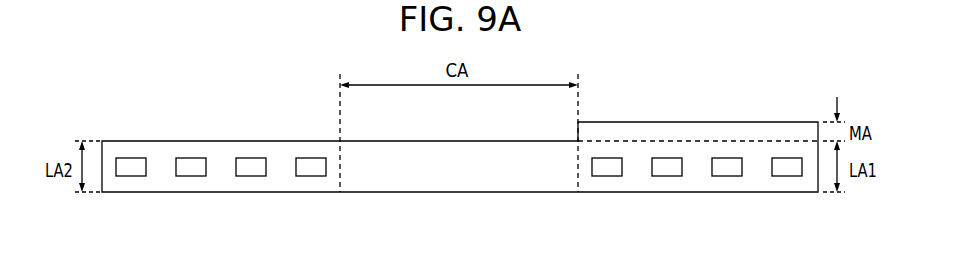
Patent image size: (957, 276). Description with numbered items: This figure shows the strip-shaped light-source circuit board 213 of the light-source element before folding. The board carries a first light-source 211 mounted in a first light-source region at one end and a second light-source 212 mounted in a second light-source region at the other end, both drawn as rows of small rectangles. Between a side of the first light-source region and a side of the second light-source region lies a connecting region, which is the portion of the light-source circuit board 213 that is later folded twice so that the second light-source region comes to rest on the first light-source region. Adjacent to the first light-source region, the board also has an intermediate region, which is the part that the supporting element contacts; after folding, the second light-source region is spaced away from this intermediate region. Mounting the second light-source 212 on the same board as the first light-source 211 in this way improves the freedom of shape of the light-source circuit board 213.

The first light-source 211 is at (787, 181).
The second light-source 212 is at (130, 181).
The light-source circuit board 213 is at (455, 175).